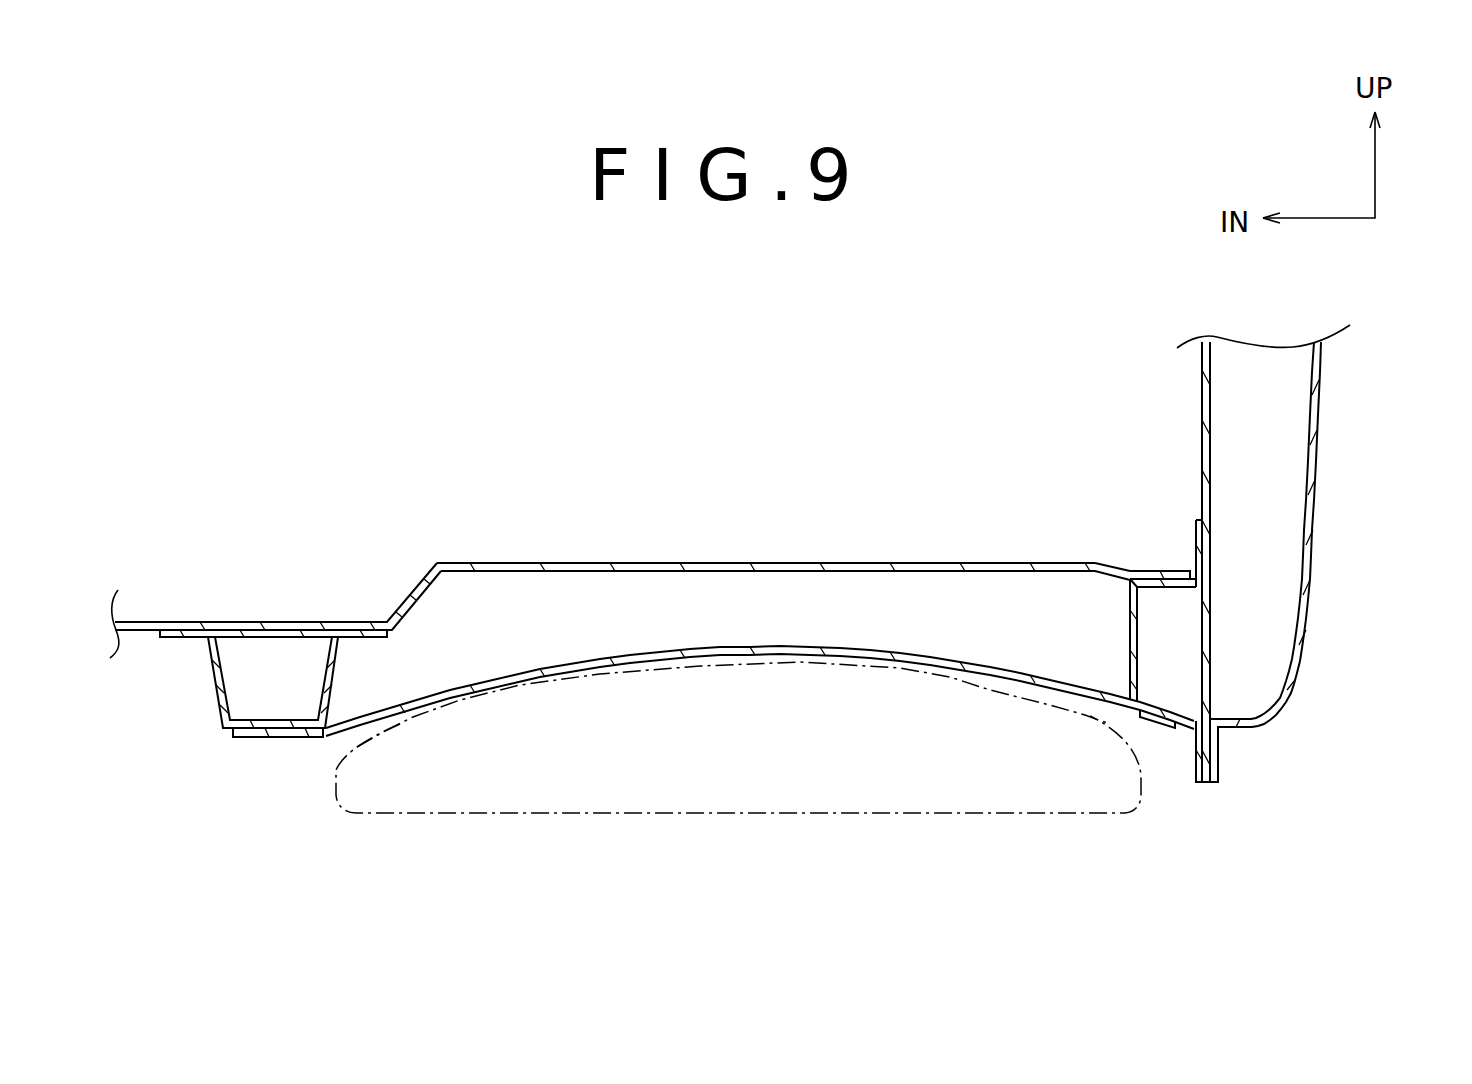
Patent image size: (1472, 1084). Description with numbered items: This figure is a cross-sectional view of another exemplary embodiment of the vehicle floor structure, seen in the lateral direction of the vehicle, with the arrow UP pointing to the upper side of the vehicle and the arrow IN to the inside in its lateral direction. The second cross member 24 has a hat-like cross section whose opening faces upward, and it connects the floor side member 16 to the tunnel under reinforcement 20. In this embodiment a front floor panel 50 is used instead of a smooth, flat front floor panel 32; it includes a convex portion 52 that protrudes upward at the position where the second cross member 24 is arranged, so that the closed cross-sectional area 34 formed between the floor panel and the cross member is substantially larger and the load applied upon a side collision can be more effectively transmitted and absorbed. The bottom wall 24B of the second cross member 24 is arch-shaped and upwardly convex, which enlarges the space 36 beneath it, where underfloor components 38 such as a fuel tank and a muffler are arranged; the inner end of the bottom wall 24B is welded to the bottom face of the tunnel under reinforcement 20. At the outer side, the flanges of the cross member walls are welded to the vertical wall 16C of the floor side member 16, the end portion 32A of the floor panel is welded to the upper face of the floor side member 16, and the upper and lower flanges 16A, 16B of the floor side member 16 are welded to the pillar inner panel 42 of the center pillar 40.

The floor side member 16 is at (1121, 658).
The upper flange 16A is at (1197, 547).
The lower flange 16B is at (1192, 758).
The vertical wall 16C is at (1129, 636).
The tunnel under reinforcement 20 is at (216, 697).
The second cross member 24 is at (868, 662).
The bottom wall 24B is at (923, 672).
The front floor panel 32 is at (302, 619).
The end portion 32A is at (1160, 567).
The closed cross-sectional area 34 is at (624, 630).
The space 36 is at (737, 742).
The underfloor components 38 is at (763, 813).
The center pillar 40 is at (1322, 410).
The pillar inner panel 42 is at (1203, 430).
The front floor panel 50 is at (783, 515).
The convex portion 52 is at (760, 562).